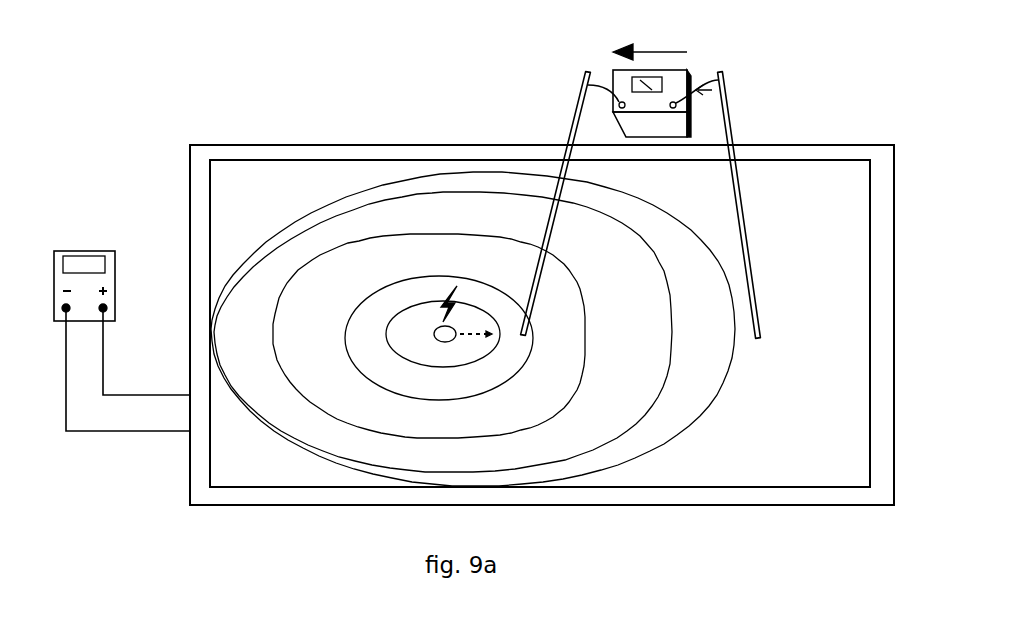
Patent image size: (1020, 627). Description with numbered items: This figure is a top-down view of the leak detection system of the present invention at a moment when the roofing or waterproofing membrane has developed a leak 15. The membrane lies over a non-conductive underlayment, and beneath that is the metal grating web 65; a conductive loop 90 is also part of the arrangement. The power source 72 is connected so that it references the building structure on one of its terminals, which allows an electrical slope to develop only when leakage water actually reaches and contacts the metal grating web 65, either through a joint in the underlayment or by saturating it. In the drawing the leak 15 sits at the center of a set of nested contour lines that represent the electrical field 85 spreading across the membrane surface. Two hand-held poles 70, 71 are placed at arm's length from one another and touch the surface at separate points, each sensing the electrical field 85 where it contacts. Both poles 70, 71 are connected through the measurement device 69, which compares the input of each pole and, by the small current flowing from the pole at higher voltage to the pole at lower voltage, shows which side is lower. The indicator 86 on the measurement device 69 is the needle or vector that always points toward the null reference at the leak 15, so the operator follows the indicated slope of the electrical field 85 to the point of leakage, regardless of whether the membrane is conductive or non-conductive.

The leak 15 is at (438, 325).
The metal grating web 65 is at (202, 452).
The measurement device 69 is at (695, 112).
The pole 70 is at (583, 96).
The pole 71 is at (725, 86).
The power source 72 is at (117, 263).
The electrical field 85 is at (585, 317).
The indicator 86 is at (650, 67).
The conductive loop 90 is at (211, 382).